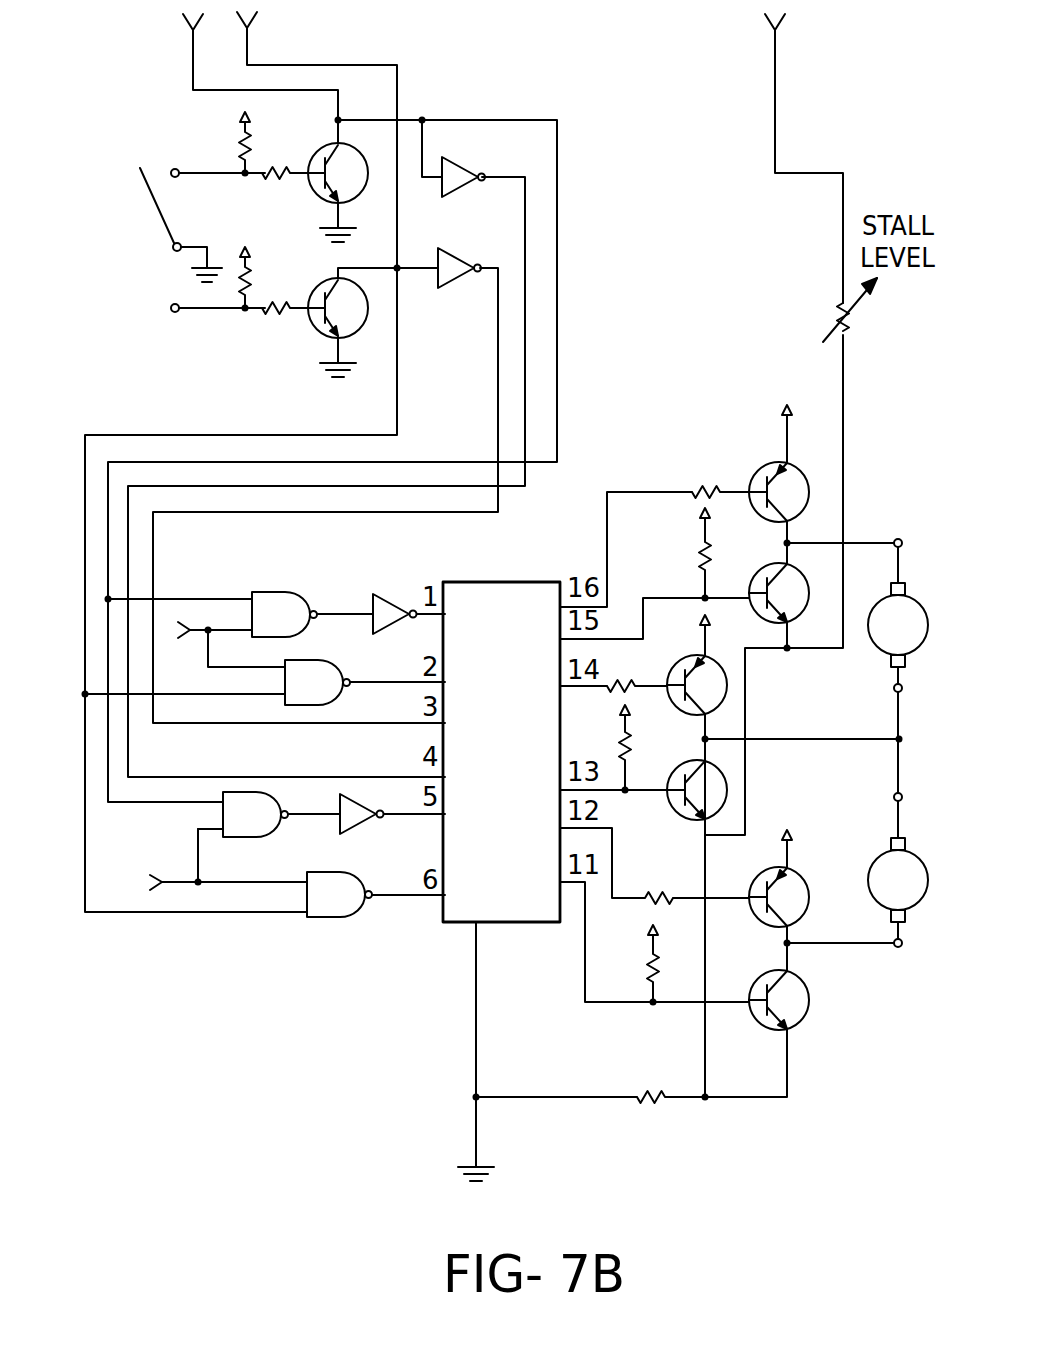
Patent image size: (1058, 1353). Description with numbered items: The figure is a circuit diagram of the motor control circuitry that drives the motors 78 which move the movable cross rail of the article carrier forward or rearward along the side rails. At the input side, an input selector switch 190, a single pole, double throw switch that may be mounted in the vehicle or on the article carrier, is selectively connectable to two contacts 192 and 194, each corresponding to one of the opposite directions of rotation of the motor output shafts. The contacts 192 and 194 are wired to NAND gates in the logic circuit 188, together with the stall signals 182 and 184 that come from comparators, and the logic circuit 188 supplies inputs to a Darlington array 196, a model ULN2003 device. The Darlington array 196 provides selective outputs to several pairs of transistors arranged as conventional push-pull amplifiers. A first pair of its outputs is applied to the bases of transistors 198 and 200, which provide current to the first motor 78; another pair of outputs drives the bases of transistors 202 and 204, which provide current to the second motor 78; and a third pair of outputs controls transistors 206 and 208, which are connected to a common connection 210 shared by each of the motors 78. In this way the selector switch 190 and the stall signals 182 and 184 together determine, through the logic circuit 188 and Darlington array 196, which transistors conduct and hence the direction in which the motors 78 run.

The motors 78 is at (915, 607).
The stall signal 182 is at (197, 630).
The stall signal 184 is at (180, 885).
The logic circuit 188 is at (335, 552).
The input selector switch 190 is at (152, 238).
The contact 192 is at (170, 168).
The contact 194 is at (172, 313).
The Darlington array 196 is at (475, 590).
The transistor 198 is at (802, 482).
The transistor 200 is at (805, 578).
The transistor 202 is at (797, 890).
The transistor 204 is at (805, 1003).
The transistor 206 is at (728, 686).
The transistor 208 is at (728, 786).
The common connection 210 is at (908, 740).